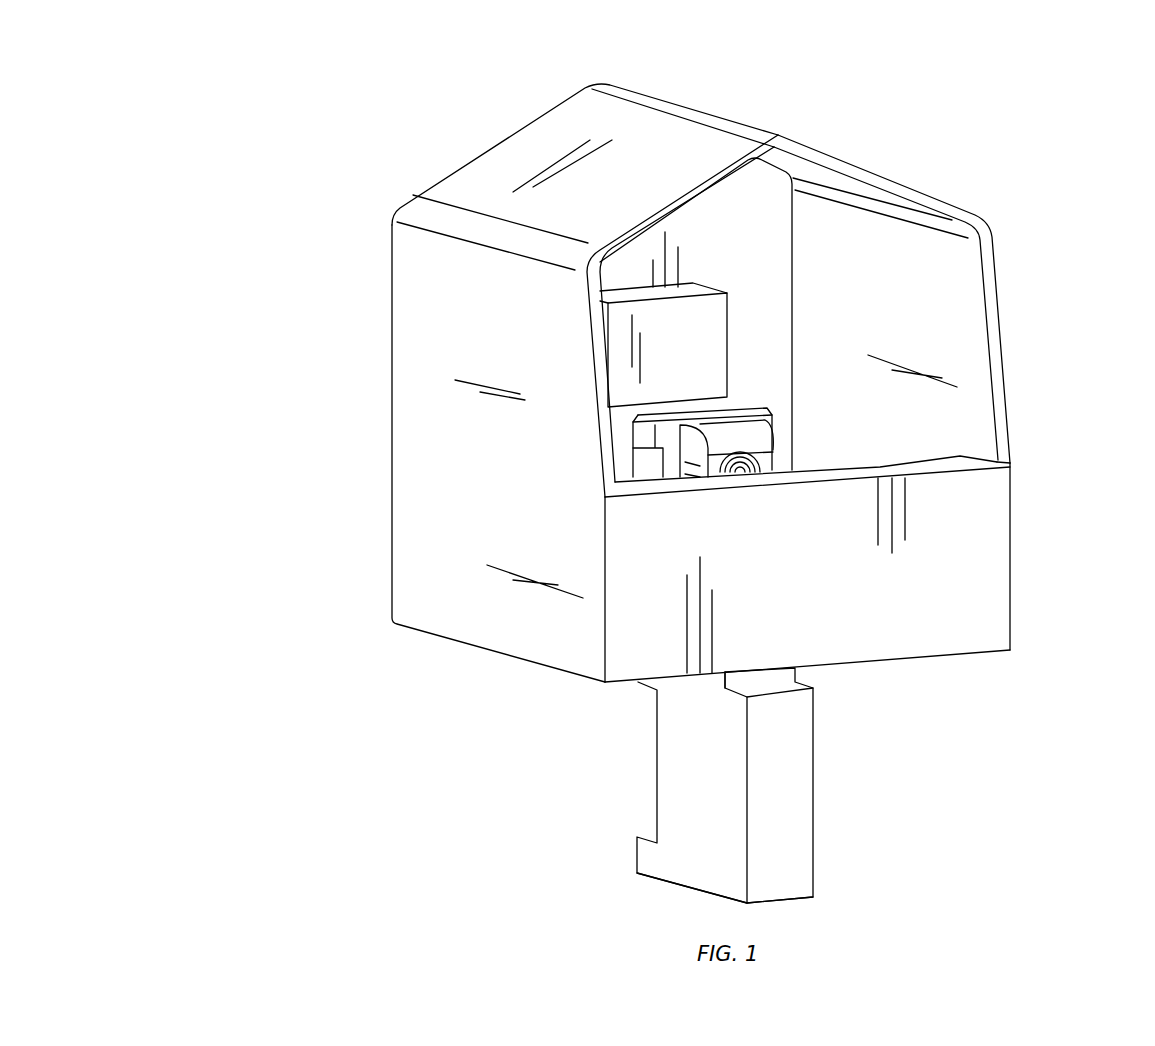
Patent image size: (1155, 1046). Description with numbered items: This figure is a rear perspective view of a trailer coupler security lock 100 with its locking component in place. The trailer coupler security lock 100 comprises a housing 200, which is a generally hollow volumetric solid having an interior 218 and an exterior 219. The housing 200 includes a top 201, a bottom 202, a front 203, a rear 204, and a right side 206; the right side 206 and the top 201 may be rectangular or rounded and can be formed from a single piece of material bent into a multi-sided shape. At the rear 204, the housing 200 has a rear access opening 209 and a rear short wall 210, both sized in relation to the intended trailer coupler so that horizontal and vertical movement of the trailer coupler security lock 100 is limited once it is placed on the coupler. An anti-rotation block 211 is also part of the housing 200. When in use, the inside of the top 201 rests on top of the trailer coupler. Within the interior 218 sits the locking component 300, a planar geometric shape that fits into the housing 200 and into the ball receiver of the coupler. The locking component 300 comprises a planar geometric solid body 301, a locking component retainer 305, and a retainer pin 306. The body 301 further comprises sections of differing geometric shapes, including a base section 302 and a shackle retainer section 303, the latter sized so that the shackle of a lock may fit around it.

The trailer coupler security lock 100 is at (1000, 107).
The housing 200 is at (382, 358).
The top 201 is at (515, 158).
The bottom 202 is at (528, 663).
The front 203 is at (390, 458).
The rear 204 is at (967, 598).
The right side 206 is at (463, 523).
The rear access opening 209 is at (967, 395).
The rear short wall 210 is at (940, 512).
The anti-rotation block 211 is at (695, 330).
The interior 218 is at (942, 318).
The exterior 219 is at (755, 118).
The locking component 300 is at (770, 403).
The body 301 is at (788, 820).
The base section 302 is at (690, 870).
The shackle retainer section 303 is at (678, 755).
The locking component retainer 305 is at (770, 420).
The retainer pin 306 is at (760, 460).